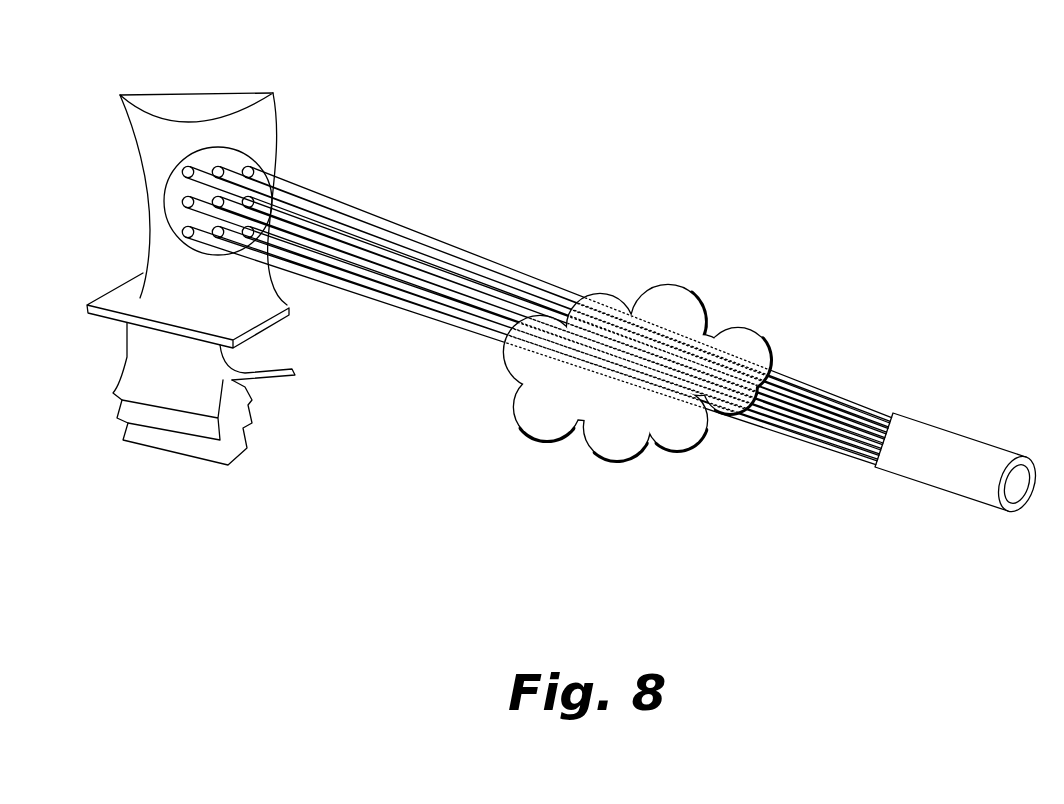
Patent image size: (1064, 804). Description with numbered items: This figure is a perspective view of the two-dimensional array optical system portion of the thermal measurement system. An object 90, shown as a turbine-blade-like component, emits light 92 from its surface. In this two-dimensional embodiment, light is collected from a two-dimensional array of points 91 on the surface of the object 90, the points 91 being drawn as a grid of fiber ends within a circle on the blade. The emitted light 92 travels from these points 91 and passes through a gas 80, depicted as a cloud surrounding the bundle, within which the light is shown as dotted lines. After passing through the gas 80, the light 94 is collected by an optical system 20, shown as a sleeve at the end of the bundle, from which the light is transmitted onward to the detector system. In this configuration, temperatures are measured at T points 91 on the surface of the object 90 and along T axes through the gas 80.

The object 90 is at (120, 103).
The points on the surface of the object 91 is at (270, 160).
The emitted light 92 is at (348, 273).
The gas 80 is at (657, 290).
The collected light 94 is at (793, 425).
The optical system 20 is at (940, 430).